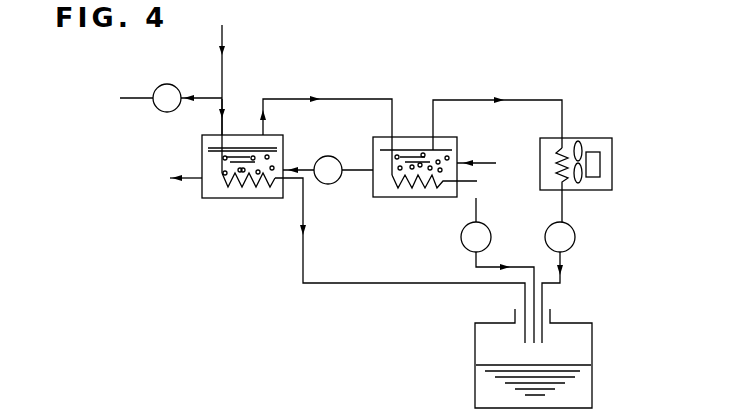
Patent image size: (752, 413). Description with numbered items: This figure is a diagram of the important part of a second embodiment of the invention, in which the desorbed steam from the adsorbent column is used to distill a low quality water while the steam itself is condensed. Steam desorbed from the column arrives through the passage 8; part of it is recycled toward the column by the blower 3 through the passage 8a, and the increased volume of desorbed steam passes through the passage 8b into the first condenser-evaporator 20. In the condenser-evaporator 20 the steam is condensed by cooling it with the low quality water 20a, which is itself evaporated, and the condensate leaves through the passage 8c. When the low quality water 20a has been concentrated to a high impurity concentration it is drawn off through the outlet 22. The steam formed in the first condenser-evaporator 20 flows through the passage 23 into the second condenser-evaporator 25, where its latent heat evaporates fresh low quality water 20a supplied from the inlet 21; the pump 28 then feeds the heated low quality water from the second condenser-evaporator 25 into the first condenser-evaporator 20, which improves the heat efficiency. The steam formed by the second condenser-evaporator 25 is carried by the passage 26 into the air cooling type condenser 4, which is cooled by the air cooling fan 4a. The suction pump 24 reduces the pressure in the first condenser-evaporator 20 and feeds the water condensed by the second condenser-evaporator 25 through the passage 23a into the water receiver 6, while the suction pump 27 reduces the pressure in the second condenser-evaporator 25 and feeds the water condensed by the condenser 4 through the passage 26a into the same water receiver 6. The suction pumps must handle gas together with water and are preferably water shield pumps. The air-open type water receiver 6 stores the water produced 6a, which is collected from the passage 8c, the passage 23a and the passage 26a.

The blower 3 is at (167, 84).
The condenser 4 is at (580, 138).
The air cooling fan 4a is at (600, 165).
The water receiver 6 is at (592, 343).
The water produced 6a is at (576, 391).
The passage 8 is at (223, 38).
The passage 8a is at (209, 97).
The passage 8b is at (225, 101).
The passage 8c is at (304, 262).
The condenser-evaporator 20 is at (228, 198).
The low quality water 20a is at (280, 149).
The inlet 21 is at (481, 162).
The outlet 22 is at (192, 180).
The passage 23 is at (344, 98).
The passage 23a is at (488, 266).
The suction pump 24 is at (493, 218).
The second condenser-evaporator 25 is at (384, 198).
The passage 26 is at (461, 99).
The passage 26a is at (566, 270).
The suction pump 27 is at (580, 227).
The pump 28 is at (328, 184).